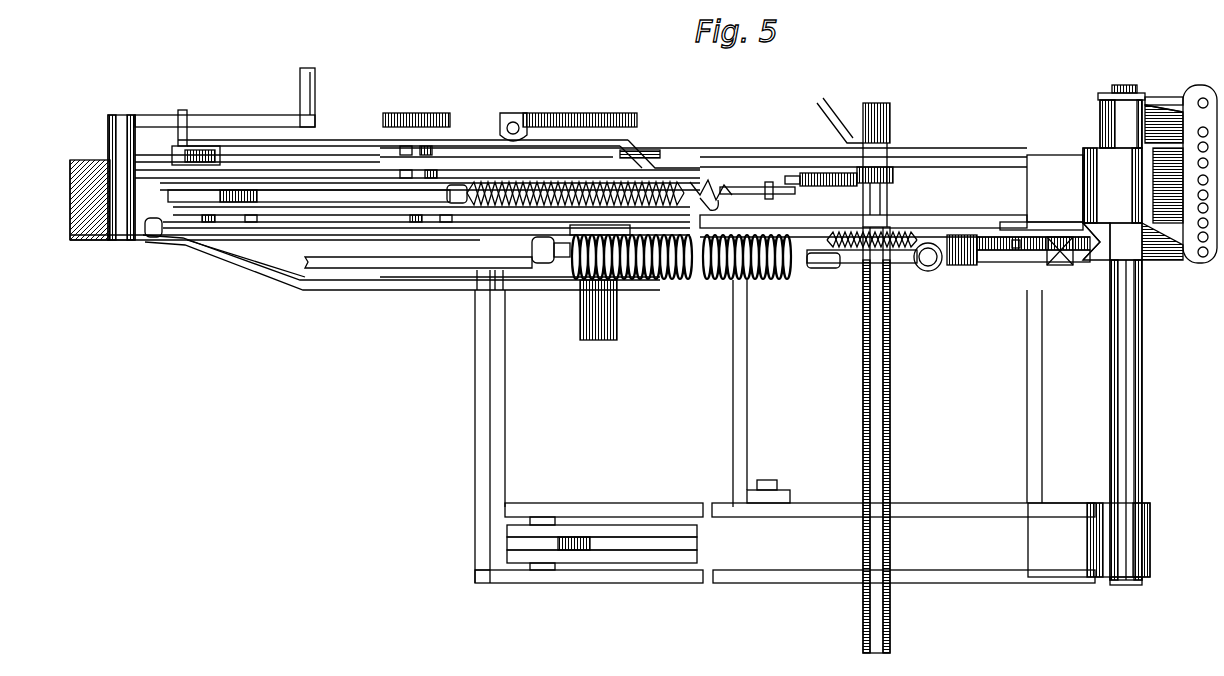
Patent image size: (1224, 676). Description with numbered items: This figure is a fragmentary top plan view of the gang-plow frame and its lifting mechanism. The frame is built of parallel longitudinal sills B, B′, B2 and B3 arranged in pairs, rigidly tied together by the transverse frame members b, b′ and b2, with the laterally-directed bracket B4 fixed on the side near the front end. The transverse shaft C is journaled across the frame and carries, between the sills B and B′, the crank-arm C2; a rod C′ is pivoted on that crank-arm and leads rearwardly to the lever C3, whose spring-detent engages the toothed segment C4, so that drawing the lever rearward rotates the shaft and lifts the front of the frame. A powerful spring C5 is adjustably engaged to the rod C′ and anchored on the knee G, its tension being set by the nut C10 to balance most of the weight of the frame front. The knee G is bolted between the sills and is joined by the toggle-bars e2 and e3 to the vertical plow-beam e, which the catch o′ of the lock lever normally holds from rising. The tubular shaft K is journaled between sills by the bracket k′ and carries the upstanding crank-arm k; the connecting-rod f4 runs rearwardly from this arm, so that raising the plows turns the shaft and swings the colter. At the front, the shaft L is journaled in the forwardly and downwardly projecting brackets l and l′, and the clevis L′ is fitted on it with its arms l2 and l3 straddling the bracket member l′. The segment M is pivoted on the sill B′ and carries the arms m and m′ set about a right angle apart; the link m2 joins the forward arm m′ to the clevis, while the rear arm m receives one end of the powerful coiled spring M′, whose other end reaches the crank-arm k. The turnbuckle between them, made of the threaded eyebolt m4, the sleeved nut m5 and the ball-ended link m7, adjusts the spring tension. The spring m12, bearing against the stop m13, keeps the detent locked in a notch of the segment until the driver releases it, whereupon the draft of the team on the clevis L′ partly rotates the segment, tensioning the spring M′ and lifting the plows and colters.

The segment M is at (114, 140).
The angular detent or catch o′ is at (230, 145).
The toggle-bar e2 is at (312, 182).
The vertical beam e is at (202, 196).
The toggle-bar e3 is at (302, 200).
The connecting-rod f4 is at (372, 262).
The toothed segment C4 is at (408, 120).
The lever C3 is at (517, 128).
The knee G is at (475, 185).
The spring C5 is at (640, 177).
The rod C′ is at (705, 178).
The nut C10 is at (770, 182).
The crank-arm C2 is at (835, 174).
The longitudinal sill B is at (960, 150).
The longitudinal sill B′ is at (970, 215).
The laterally-directed bracket B4 is at (838, 118).
The transverse shaft C is at (893, 378).
The stop m13 is at (855, 232).
The threaded eyebolt m4 is at (862, 264).
The spring m12 is at (880, 280).
The sleeved nut m5 is at (898, 270).
The link m7 is at (957, 268).
The rearwardly-directed arm m is at (1010, 264).
The forwardly-directed arm m′ is at (1040, 264).
The link m2 is at (1045, 264).
The bracket k′ is at (583, 252).
The crank-arm k is at (565, 262).
The shaft K is at (602, 307).
The coiled spring M′ is at (755, 270).
The transverse frame member b2 is at (500, 440).
The transverse frame member b′ is at (747, 418).
The transverse frame member b is at (1042, 426).
The longitudinal sill B2 is at (948, 503).
The longitudinal sill B3 is at (980, 575).
The bracket l is at (1150, 533).
The shaft L is at (1144, 400).
The clevis arm l2 is at (1118, 84).
The bracket member l′ is at (1105, 170).
The clevis L′ is at (1185, 70).
The clevis arm l3 is at (1118, 250).